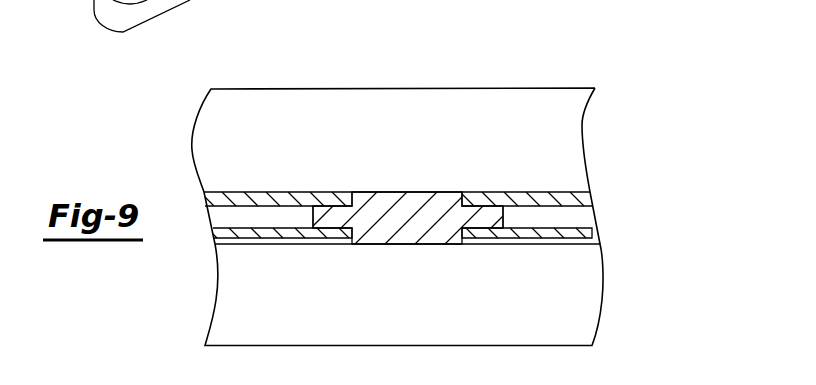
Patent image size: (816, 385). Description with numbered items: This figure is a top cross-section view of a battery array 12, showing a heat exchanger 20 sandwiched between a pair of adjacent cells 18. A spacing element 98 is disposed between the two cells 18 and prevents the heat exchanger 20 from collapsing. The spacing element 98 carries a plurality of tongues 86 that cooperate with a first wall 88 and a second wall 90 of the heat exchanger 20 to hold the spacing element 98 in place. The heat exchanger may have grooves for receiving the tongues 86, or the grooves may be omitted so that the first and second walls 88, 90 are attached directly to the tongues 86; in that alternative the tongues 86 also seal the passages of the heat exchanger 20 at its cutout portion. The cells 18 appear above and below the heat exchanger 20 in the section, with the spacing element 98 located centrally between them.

The assembly 12 is at (535, 55).
The cell 18 is at (415, 98).
The heat exchanger 20 is at (213, 200).
The tongue 86 is at (318, 216).
The first wall 88 is at (578, 200).
The second wall 90 is at (580, 231).
The spacing element 98 is at (415, 225).